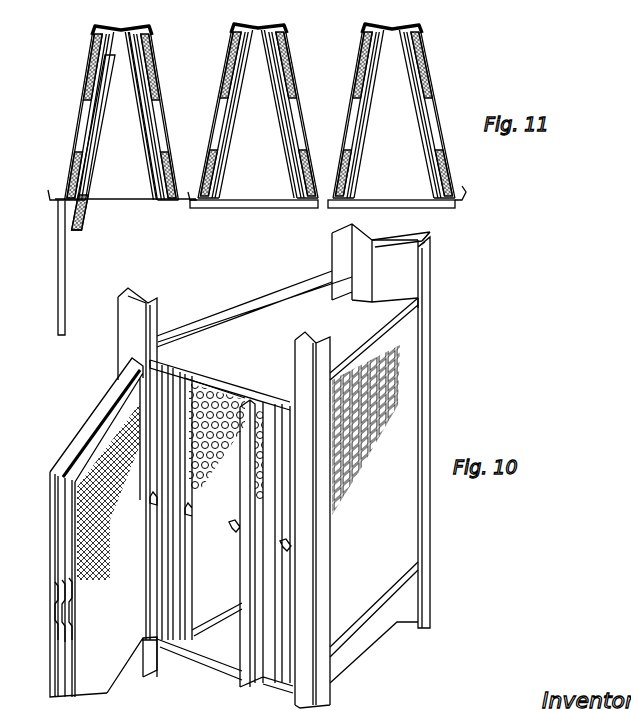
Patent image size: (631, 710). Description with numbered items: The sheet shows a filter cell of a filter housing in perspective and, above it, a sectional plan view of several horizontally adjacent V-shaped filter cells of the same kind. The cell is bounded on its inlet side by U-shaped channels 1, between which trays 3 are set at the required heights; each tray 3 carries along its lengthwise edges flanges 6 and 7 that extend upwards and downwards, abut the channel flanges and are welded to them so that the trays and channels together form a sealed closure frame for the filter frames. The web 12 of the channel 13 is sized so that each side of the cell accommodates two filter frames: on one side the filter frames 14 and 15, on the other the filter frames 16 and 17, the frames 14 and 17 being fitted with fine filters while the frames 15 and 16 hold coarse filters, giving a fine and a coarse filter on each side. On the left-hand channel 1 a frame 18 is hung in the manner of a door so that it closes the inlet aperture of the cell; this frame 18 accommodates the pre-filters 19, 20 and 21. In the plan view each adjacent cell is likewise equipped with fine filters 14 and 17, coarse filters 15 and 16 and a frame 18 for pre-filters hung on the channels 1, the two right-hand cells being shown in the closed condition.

In FIG. 11, the U-shaped channel 1 is at (51, 192).
In FIG. 10, the U-shaped channel 1 is at (129, 320).
In FIG. 11, the tray 3 is at (115, 155).
In FIG. 10, the tray 3 is at (284, 354).
In FIG. 10, the flange 6 is at (362, 352).
In FIG. 10, the flange 7 is at (250, 322).
In FIG. 10, the web 12 is at (403, 240).
In FIG. 11, the channel 13 is at (143, 26).
In FIG. 10, the channel 13 is at (430, 238).
In FIG. 11, the filter frame 14 is at (82, 148).
In FIG. 10, the filter frame 14 is at (165, 623).
In FIG. 11, the filter frame 15 is at (85, 216).
In FIG. 10, the filter frame 15 is at (180, 638).
In FIG. 11, the filter frame 16 is at (139, 103).
In FIG. 10, the filter frame 16 is at (243, 540).
In FIG. 11, the filter frame 17 is at (154, 127).
In FIG. 10, the filter frame 17 is at (394, 490).
In FIG. 11, the frame 18 is at (58, 265).
In FIG. 10, the frame 18 is at (72, 458).
In FIG. 10, the pre-filter 19 is at (57, 535).
In FIG. 10, the pre-filter 20 is at (63, 518).
In FIG. 10, the pre-filter 21 is at (115, 676).